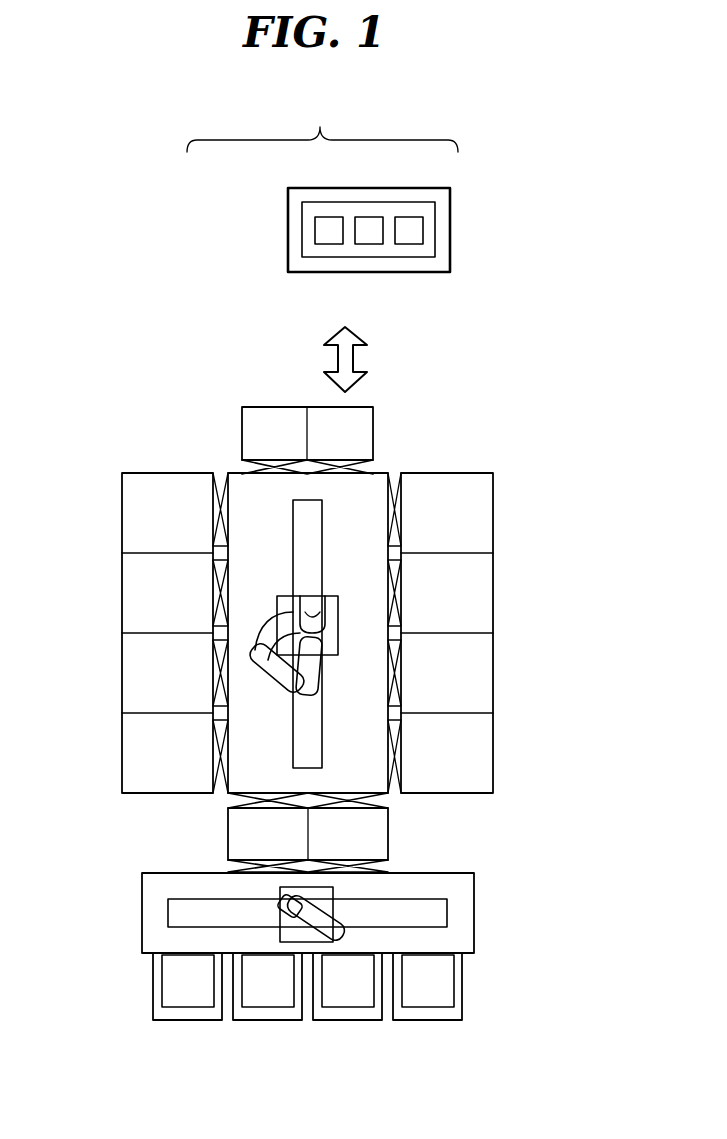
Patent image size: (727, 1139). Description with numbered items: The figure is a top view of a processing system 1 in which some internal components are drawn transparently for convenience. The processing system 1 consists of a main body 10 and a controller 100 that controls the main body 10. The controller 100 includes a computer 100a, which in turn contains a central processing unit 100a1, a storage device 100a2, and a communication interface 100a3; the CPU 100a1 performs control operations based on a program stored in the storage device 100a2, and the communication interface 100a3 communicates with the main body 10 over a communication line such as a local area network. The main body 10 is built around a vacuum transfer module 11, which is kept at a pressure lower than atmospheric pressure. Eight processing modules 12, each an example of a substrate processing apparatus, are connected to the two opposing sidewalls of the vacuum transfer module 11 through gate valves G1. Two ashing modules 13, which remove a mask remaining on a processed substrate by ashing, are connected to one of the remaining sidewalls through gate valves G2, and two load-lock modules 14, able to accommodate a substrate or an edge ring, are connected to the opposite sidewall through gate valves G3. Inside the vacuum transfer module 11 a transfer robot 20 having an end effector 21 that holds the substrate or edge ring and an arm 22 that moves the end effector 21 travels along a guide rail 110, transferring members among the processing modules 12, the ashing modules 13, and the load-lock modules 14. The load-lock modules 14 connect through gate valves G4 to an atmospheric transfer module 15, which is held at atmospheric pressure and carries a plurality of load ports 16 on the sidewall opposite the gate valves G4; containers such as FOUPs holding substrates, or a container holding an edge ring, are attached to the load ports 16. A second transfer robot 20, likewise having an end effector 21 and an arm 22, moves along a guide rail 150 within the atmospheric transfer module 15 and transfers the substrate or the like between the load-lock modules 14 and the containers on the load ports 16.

The processing system 1 is at (320, 127).
The main body 10 is at (257, 283).
The controller 100 is at (394, 188).
The computer 100a is at (440, 229).
The central processing unit (CPU) 100a1 is at (329, 244).
The storage device 100a2 is at (369, 244).
The communication interface 100a3 is at (409, 244).
The vacuum transfer module 11 is at (388, 474).
The processing module 12 is at (122, 512).
The ashing module 13 is at (242, 418).
The load-lock module 14 is at (228, 830).
The atmospheric transfer module 15 is at (474, 905).
The guide rail 150 is at (168, 905).
The load port 16 is at (190, 1021).
The transfer robot 20 is at (224, 779).
The end effector 21 is at (281, 612).
The arm 22 is at (280, 686).
The guide rail 110 is at (322, 728).
The gate valve G1 is at (400, 474).
The gate valve G2 is at (242, 462).
The gate valve G3 is at (228, 800).
The gate valve G4 is at (228, 866).